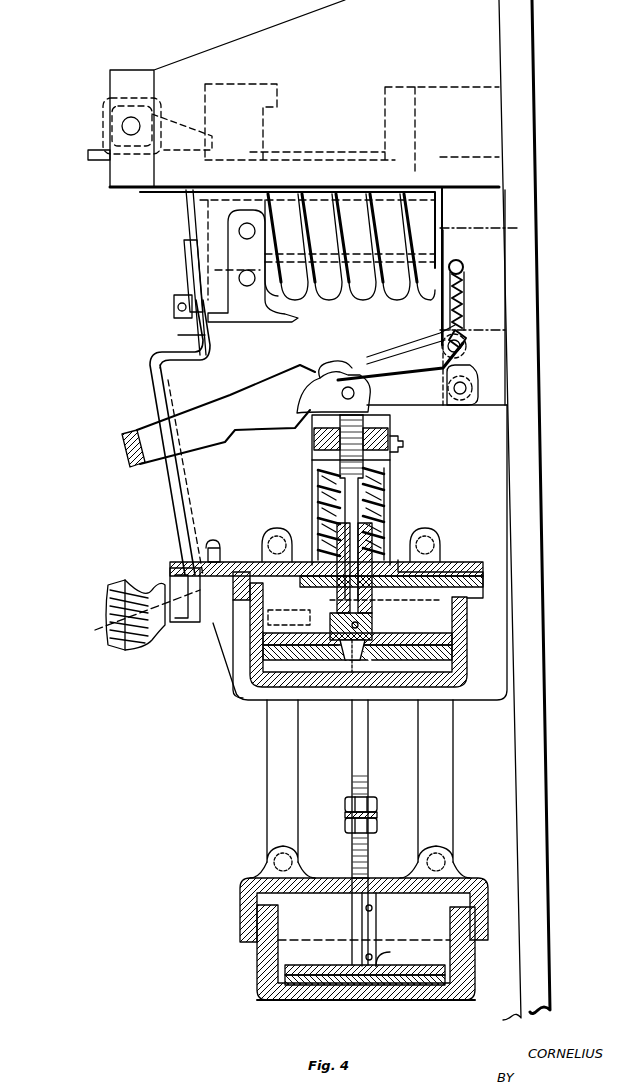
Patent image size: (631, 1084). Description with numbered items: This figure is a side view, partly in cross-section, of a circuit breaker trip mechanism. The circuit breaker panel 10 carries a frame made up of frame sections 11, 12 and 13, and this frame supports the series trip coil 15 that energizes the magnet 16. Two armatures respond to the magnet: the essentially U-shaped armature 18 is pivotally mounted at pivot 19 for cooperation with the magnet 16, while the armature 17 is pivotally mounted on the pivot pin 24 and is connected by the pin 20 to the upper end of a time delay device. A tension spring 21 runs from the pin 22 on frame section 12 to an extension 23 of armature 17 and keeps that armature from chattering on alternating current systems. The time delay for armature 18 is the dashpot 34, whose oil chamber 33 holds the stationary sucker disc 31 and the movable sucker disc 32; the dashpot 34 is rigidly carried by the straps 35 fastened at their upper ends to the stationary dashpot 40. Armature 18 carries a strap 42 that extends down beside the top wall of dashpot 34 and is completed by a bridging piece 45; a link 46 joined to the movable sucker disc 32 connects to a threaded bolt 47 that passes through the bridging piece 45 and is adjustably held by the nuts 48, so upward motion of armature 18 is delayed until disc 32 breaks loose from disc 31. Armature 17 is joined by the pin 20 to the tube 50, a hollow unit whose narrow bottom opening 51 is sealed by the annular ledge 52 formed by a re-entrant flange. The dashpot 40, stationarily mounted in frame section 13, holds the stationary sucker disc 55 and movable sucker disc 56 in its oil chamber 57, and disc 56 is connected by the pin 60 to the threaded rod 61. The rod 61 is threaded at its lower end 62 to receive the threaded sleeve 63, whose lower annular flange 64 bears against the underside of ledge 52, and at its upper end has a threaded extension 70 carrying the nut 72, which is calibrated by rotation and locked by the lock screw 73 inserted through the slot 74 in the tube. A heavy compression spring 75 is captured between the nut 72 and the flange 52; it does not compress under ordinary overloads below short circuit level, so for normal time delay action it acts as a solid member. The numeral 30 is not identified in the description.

The circuit breaker panel 10 is at (518, 122).
The frame section 11 is at (473, 50).
The frame section 12 is at (485, 283).
The frame section 13 is at (522, 687).
The series trip coil 15 is at (343, 190).
The magnet 16 is at (299, 316).
The armature 17 is at (390, 355).
The armature 18 is at (190, 427).
The pivot 19 is at (472, 386).
The pin 20 is at (345, 392).
The tension spring 21 is at (460, 305).
The pin 22 is at (463, 266).
The extension 23 is at (468, 338).
The pivot pin 24 is at (470, 345).
The lower housing base 30 is at (258, 995).
The stationary sucker disc 31 is at (478, 975).
The movable sucker disc 32 is at (478, 958).
The oil chamber 33 is at (310, 952).
The dashpot 34 is at (243, 903).
The straps 35 is at (278, 733).
The dashpot 40 is at (492, 585).
The strap 42 is at (353, 750).
The bridging piece 45 is at (378, 815).
The link 46 is at (365, 928).
The threaded bolt 47 is at (358, 870).
The nuts 48 is at (370, 805).
The tube 50 is at (322, 480).
The opening 51 is at (428, 556).
The annular ledge 52 is at (428, 560).
The stationary sucker disc 55 is at (470, 650).
The movable sucker disc 56 is at (470, 625).
The oil chamber 57 is at (289, 615).
The pin 60 is at (375, 625).
The threaded rod 61 is at (357, 497).
The threaded lower end 62 is at (330, 507).
The threaded sleeve 63 is at (317, 530).
The lower annular flange 64 is at (285, 565).
The threaded extension 70 is at (330, 437).
The nut 72 is at (365, 420).
The lock screw 73 is at (400, 443).
The slot 74 is at (395, 466).
The compression spring 75 is at (388, 508).